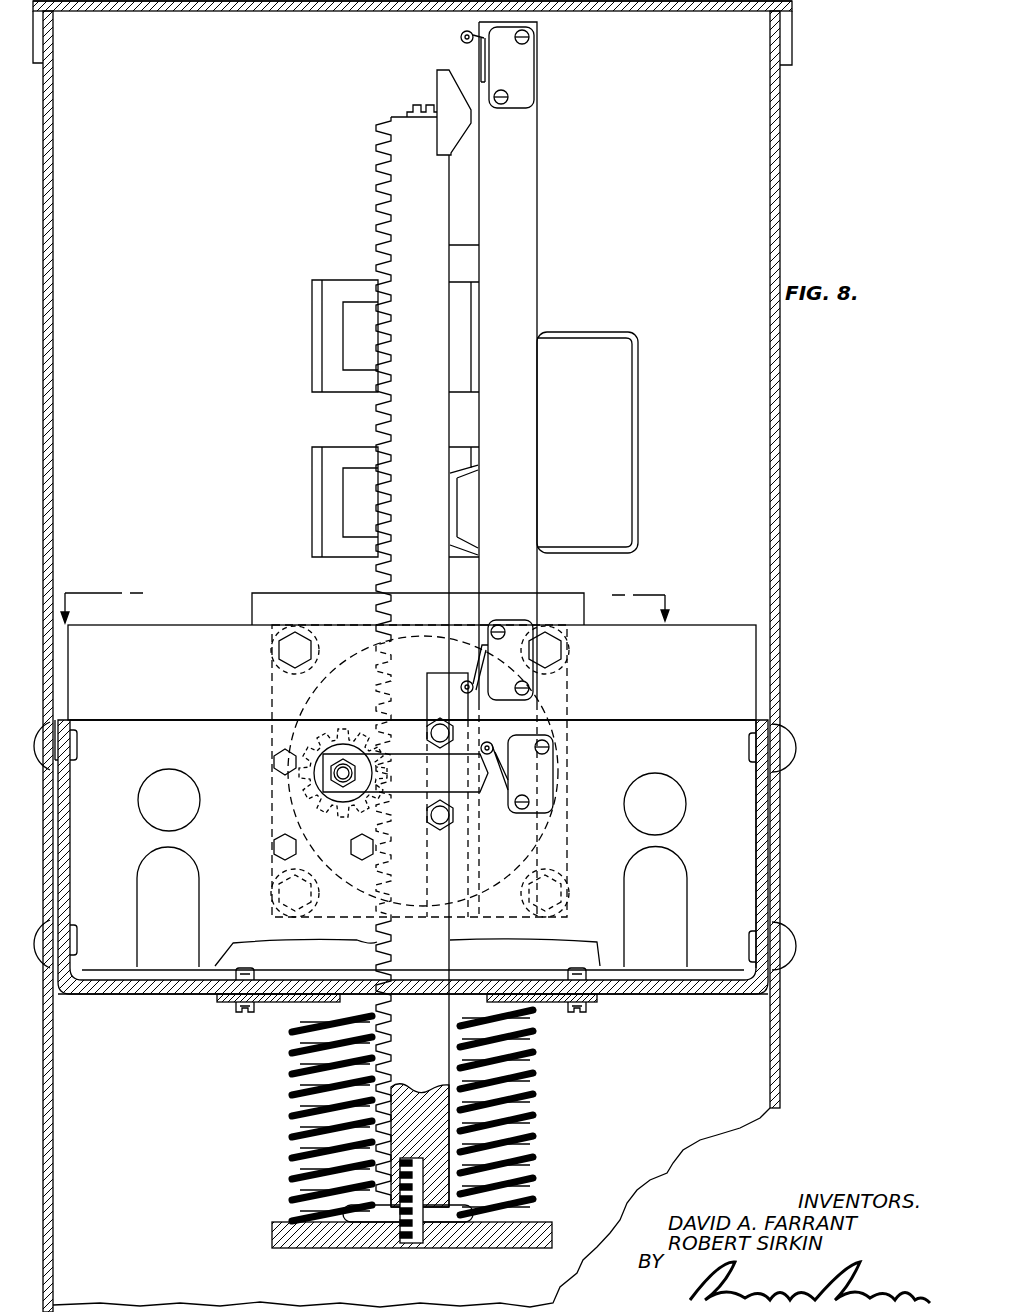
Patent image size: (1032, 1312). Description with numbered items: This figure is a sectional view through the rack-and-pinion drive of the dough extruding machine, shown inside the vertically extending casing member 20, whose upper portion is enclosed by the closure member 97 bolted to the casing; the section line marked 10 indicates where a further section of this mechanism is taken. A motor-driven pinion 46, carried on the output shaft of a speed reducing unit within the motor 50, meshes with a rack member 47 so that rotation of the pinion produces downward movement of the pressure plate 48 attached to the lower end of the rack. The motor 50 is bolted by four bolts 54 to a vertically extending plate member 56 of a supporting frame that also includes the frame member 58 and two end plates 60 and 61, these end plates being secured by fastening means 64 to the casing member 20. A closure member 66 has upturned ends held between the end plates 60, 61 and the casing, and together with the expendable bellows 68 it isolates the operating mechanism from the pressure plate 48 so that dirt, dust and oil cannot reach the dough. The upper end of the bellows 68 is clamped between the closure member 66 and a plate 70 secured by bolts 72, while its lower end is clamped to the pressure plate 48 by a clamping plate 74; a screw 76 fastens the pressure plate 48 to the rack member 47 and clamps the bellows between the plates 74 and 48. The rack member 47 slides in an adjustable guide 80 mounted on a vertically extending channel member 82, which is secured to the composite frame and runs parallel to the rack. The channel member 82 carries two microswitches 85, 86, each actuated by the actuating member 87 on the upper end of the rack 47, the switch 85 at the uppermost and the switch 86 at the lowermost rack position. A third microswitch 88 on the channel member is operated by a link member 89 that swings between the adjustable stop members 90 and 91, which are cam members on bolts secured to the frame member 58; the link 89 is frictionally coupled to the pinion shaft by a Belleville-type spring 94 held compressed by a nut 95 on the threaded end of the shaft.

The drive assembly 10 is at (370, 589).
The casing member 20 is at (55, 452).
The pinion 46 is at (356, 726).
The rack member 47 is at (411, 212).
The pressure plate 48 is at (530, 1220).
The motor 50 is at (300, 706).
The bolts 54 is at (278, 654).
The plate member 56 is at (700, 640).
The frame member 58 is at (665, 735).
The end plate 60 is at (62, 790).
The end plate 61 is at (757, 830).
The fastening means 64 is at (60, 735).
The closure member 66 is at (165, 990).
The bellows 68 is at (290, 1098).
The plate 70 is at (238, 1000).
The bolts 72 is at (258, 1014).
The clamping plate 74 is at (366, 1222).
The screw 76 is at (416, 1245).
The adjustable guide 80 is at (540, 706).
The channel member 82 is at (523, 155).
The microswitch 85 is at (529, 92).
The microswitch 86 is at (518, 627).
The actuating member 87 is at (437, 82).
The third microswitch 88 is at (528, 778).
The link member 89 is at (408, 780).
The adjustable stop member 90 is at (437, 728).
The adjustable stop member 91 is at (452, 812).
The Belleville-type spring 94 is at (322, 778).
The nut 95 is at (333, 778).
The closure member 97 is at (738, 12).